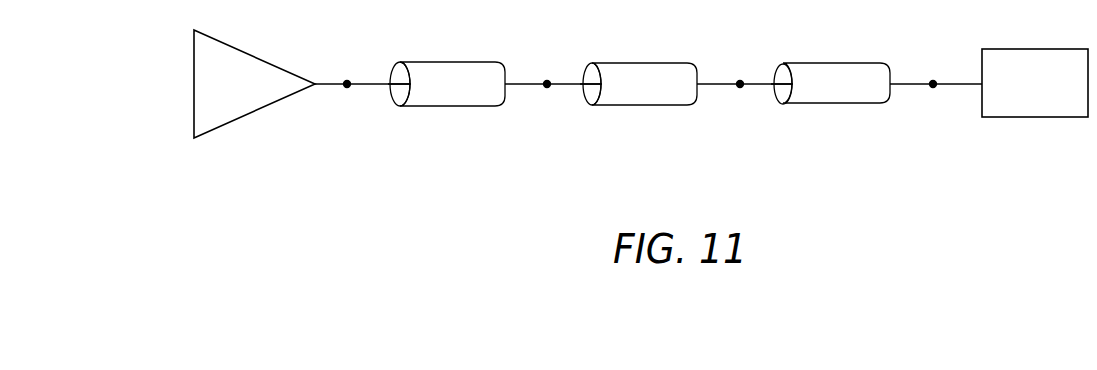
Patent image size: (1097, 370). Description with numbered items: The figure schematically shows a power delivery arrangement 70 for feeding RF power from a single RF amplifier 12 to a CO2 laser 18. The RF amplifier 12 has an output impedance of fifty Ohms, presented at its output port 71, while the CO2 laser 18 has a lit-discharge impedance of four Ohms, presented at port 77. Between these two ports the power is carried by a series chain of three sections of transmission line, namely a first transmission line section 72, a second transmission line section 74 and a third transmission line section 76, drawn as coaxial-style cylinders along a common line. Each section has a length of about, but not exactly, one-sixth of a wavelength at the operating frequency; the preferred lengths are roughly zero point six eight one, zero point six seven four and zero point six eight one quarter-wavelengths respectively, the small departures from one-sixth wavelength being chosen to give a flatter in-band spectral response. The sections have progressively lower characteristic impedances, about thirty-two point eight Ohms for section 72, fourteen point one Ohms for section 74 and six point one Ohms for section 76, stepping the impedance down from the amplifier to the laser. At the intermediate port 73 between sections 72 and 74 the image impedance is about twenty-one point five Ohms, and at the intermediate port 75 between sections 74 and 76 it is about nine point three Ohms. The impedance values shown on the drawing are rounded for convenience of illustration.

The RF amplifier 12 is at (248, 117).
The CO2 laser 18 is at (1048, 117).
The power delivery arrangement 70 is at (818, 184).
The port 71 is at (347, 84).
The first transmission line section 72 is at (443, 106).
The intermediate port 73 is at (547, 84).
The second transmission line section 74 is at (638, 105).
The intermediate port 75 is at (740, 84).
The third transmission line section 76 is at (852, 103).
The port 77 is at (933, 84).